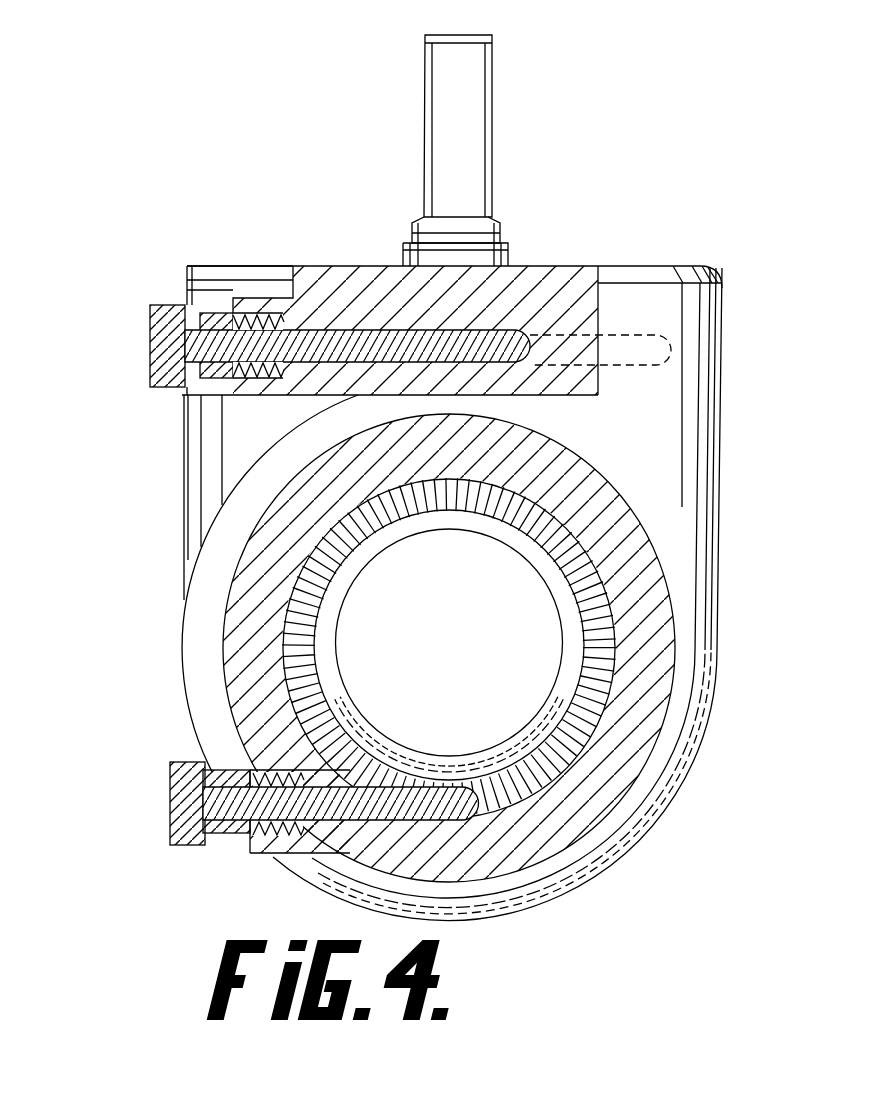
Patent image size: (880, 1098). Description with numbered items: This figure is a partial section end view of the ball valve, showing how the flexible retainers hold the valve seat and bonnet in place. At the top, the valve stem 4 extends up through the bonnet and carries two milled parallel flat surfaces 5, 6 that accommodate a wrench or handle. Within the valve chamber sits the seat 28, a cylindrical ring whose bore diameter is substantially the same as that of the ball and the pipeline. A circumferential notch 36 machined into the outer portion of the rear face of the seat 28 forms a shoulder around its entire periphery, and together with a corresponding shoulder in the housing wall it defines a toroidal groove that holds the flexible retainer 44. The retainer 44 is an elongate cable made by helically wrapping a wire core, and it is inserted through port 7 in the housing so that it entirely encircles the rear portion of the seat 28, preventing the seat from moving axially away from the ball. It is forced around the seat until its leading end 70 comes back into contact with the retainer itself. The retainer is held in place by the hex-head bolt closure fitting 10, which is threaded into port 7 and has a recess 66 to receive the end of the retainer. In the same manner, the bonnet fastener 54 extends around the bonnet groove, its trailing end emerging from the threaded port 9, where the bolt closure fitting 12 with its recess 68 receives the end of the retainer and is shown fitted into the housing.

The valve stem 4 is at (440, 80).
The milled flat surface 5 is at (426, 125).
The milled flat surface 6 is at (490, 125).
The bonnet fastener 54 is at (322, 345).
The recess 68 is at (208, 300).
The port 9 is at (258, 316).
The bolt closure fitting 12 is at (150, 350).
The seat 28 is at (565, 598).
The circumferential notch 36 is at (388, 783).
The flexible retainer 44 is at (418, 810).
The recess 66 is at (228, 767).
The port 7 is at (270, 853).
The bolt closure fitting 10 is at (170, 822).
The leading end 70 is at (358, 785).